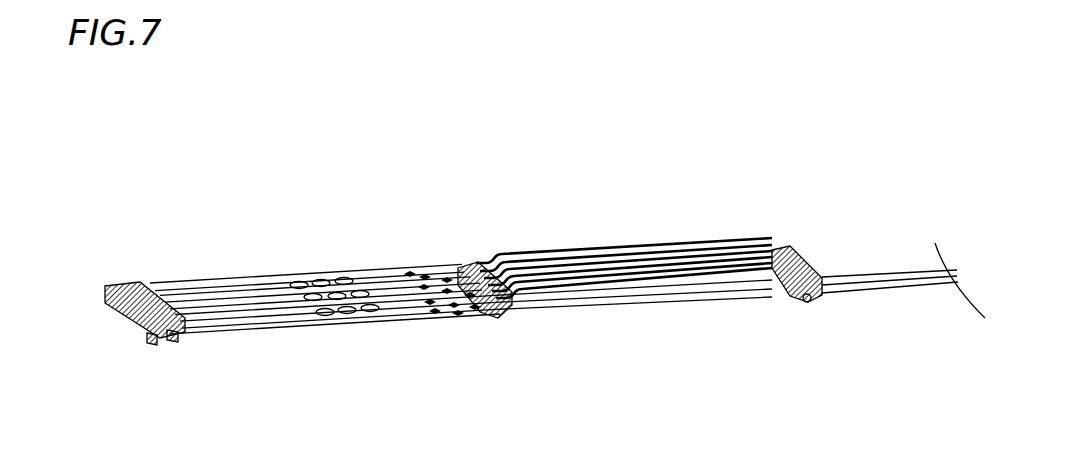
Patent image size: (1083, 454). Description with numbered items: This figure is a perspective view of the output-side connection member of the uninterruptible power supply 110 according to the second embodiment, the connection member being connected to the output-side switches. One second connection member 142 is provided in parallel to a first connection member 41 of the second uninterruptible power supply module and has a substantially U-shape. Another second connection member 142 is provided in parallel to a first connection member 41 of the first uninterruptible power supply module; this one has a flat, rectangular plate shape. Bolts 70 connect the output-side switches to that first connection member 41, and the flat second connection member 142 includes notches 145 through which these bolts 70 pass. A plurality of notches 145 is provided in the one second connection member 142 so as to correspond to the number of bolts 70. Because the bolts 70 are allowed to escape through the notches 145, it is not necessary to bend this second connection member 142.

The uninterruptible power supply 110 is at (203, 153).
The bolt 70 is at (140, 283).
The second connection member 142 is at (400, 308).
The first connection member 41 is at (398, 320).
The notch 145 is at (331, 318).